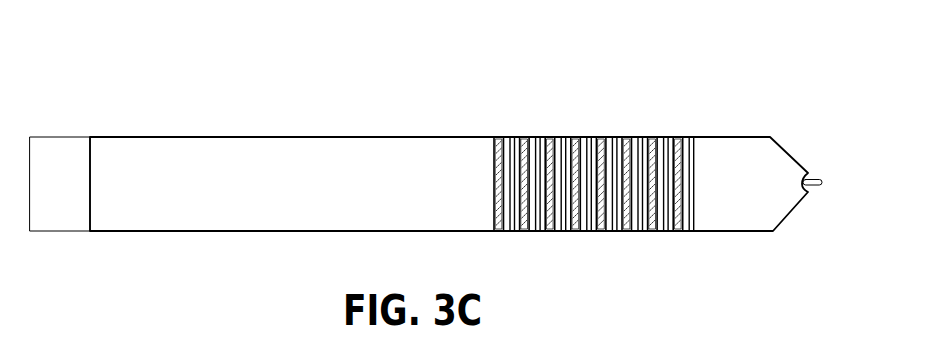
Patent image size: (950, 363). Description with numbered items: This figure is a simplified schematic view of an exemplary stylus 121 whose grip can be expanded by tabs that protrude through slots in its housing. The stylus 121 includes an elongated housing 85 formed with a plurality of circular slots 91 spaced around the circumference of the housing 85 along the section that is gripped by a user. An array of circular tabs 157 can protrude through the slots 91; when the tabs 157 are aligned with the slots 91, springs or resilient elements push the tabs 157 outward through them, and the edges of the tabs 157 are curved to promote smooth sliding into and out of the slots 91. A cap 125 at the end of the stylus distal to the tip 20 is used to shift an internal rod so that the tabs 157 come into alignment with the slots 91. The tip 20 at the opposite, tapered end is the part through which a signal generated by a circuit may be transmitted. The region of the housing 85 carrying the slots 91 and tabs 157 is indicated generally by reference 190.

The tip 20 is at (814, 174).
The housing 85 is at (252, 137).
The circular slots 91 is at (662, 192).
The stylus 121 is at (416, 116).
The cap 125 is at (72, 140).
The circular tabs 157 is at (573, 185).
The electrode array 190 is at (586, 123).